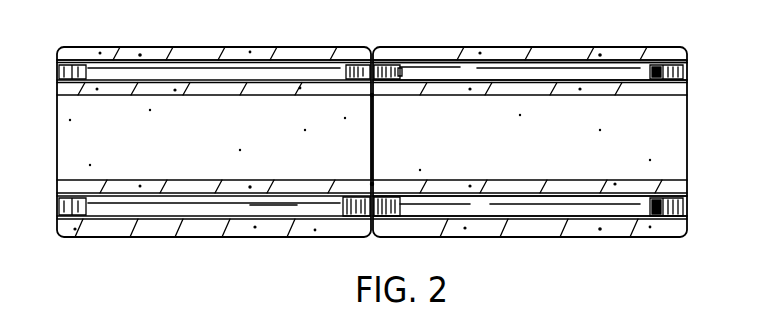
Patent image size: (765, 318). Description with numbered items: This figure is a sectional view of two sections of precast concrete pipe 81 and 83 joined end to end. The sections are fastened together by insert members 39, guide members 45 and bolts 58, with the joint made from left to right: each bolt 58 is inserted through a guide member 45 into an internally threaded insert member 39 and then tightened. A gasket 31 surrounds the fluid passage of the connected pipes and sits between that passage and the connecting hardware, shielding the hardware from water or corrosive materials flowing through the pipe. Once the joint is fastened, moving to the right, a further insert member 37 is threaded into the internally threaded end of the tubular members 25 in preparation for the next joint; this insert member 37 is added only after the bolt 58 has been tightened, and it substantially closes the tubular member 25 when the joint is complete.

The section of precast concrete pipe 81 is at (267, 58).
The section of precast concrete pipe 83 is at (609, 57).
The tubular member 25 is at (547, 63).
The insert member 37 is at (349, 56).
The guide member 45 is at (377, 60).
The bolt 58 is at (400, 74).
The gasket 31 is at (370, 181).
The insert member (externally threaded portion) 39 is at (653, 63).